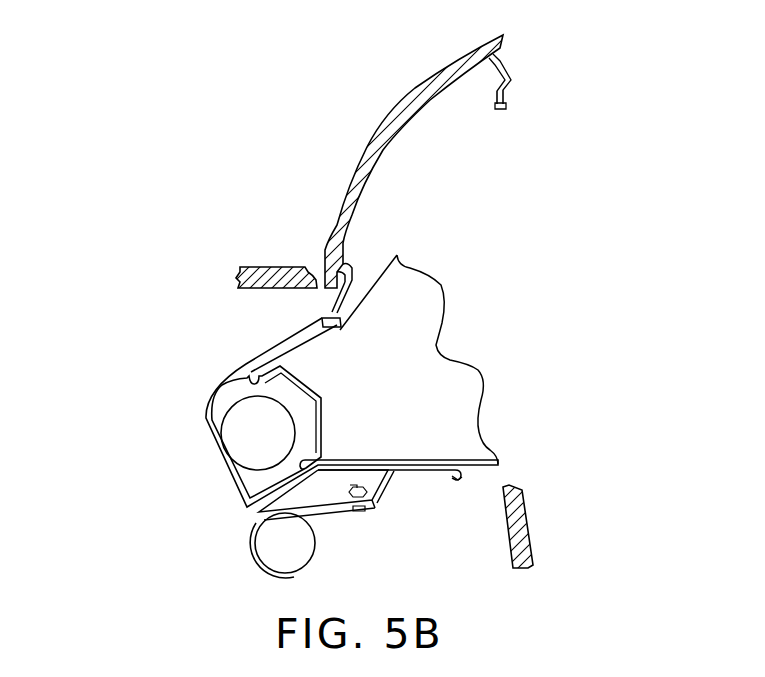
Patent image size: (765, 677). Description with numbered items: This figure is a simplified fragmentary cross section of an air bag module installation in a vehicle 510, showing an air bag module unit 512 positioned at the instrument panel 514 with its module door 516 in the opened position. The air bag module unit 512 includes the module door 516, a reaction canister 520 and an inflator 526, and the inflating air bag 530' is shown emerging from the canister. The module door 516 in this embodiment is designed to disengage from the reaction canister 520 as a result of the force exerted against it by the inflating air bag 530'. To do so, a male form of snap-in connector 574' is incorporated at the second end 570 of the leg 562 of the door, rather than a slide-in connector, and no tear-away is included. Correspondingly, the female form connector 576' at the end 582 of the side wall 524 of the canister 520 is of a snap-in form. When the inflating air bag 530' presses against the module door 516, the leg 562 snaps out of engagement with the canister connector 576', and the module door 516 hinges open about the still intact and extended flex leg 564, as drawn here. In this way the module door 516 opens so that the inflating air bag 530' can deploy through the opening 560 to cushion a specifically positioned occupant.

The vehicle 510 is at (282, 148).
The air bag module unit 512 is at (184, 453).
The instrument panel 514 is at (258, 267).
The module door 516 is at (387, 116).
The reaction canister 520 is at (227, 475).
The side wall 524 is at (410, 473).
The inflator 526 is at (286, 448).
The inflating air bag 530' is at (436, 357).
The opening 560 is at (498, 478).
The leg 562 is at (506, 73).
The flex leg 564 is at (355, 277).
The second end 570 is at (496, 104).
The male snap-in connector 574' is at (545, 118).
The female snap-in connector 576' is at (401, 514).
The end 582 is at (468, 483).